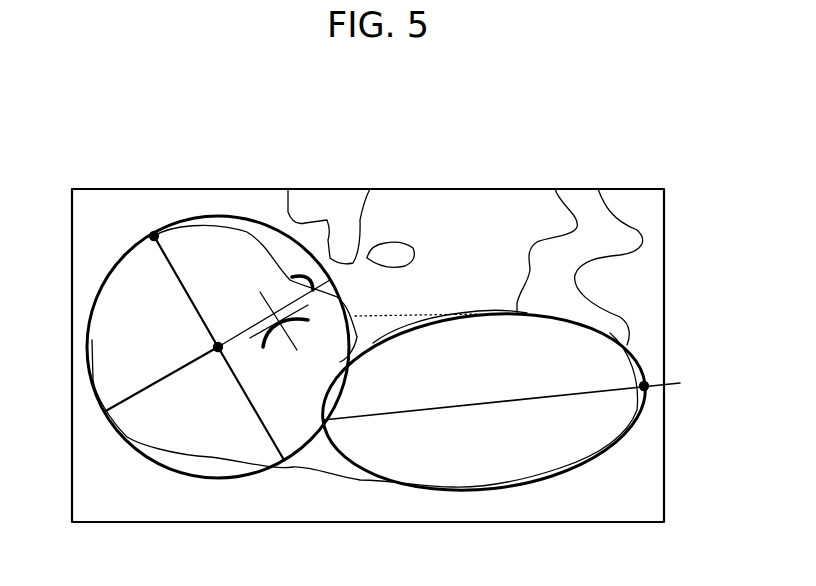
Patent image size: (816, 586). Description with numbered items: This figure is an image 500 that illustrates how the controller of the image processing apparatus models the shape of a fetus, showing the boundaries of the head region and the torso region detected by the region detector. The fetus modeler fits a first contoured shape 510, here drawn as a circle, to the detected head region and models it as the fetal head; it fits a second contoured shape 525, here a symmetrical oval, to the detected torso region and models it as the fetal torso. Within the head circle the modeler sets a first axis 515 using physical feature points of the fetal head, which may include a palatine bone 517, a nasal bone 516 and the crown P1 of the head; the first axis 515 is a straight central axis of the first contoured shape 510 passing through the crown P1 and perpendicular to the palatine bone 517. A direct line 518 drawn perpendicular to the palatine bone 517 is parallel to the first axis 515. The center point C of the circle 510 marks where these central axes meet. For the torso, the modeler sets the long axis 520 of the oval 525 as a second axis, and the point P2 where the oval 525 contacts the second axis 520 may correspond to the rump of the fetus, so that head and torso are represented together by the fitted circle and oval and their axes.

The image 500 is at (513, 189).
The first contoured shape 510 is at (210, 477).
The first axis 515 is at (268, 437).
The nasal bone 516 is at (311, 282).
The palatine bone 517 is at (308, 322).
The direct line 518 is at (290, 277).
The long axis 520 is at (427, 410).
The second contoured shape 525 is at (513, 487).
The center point of circle C is at (218, 350).
The crown of the head P1 is at (154, 234).
The point of contact P2 is at (680, 383).